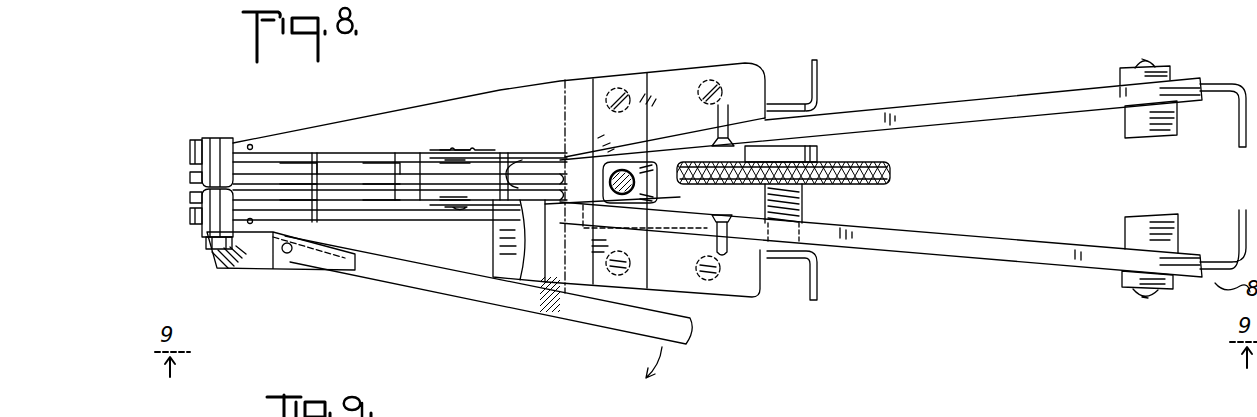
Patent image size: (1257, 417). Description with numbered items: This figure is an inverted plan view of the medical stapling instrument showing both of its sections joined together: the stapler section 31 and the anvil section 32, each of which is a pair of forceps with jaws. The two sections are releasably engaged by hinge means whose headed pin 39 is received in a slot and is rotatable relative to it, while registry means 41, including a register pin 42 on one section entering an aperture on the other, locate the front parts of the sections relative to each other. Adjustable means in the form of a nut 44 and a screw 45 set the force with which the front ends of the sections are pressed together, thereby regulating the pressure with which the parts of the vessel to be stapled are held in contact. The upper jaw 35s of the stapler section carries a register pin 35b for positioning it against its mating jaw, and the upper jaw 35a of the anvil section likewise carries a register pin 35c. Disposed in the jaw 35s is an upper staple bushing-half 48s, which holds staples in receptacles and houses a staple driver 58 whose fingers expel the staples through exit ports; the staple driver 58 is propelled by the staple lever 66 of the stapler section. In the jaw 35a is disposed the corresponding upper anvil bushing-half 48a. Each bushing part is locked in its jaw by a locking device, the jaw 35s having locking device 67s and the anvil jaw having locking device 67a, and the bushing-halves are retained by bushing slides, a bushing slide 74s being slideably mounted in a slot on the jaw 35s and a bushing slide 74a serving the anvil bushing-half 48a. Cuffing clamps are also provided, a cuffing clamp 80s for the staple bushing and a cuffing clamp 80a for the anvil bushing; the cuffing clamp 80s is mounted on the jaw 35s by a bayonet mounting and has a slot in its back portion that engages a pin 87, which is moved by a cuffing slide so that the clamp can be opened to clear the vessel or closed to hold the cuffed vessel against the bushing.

The anvil section 32 is at (749, 63).
The stapler section 31 is at (762, 296).
The bushing slide 74a is at (780, 102).
The bushing slide 74s is at (796, 252).
The nut 44 is at (890, 173).
The screw 45 is at (802, 213).
The headed pin 39 is at (660, 187).
The register pin 42 is at (305, 210).
The registry means 41 is at (305, 210).
The cuffing clamp 80a is at (190, 177).
The cuffing clamp 80s is at (198, 197).
The upper anvil bushing-half 48a is at (204, 137).
The upper staple bushing-half 48s is at (205, 190).
The jaw 35a is at (200, 150).
The jaw 35s is at (189, 223).
The staple driver 58 is at (205, 245).
The register pin 35c is at (252, 145).
The register pin 35b is at (250, 224).
The locking device 67a is at (446, 151).
The locking device 67s is at (442, 203).
The pin 87 is at (522, 160).
The staple lever 66 is at (432, 280).